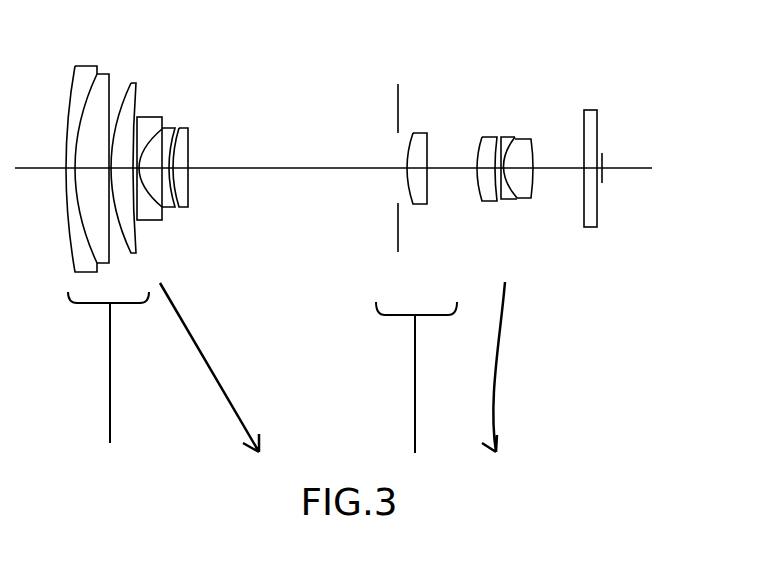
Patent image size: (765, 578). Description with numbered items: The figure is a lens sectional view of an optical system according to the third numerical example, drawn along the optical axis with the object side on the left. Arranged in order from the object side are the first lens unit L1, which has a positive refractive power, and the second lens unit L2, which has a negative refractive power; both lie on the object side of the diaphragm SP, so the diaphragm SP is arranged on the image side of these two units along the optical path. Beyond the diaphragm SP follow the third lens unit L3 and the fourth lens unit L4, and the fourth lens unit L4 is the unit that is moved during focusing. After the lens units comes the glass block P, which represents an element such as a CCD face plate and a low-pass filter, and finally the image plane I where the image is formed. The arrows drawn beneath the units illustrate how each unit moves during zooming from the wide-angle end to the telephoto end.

The first lens unit L1 is at (129, 55).
The second lens unit L2 is at (186, 55).
The third lens unit L3 is at (397, 55).
The fourth lens unit L4 is at (479, 55).
The diaphragm SP is at (398, 184).
The glass block P is at (597, 55).
The image plane I is at (603, 163).